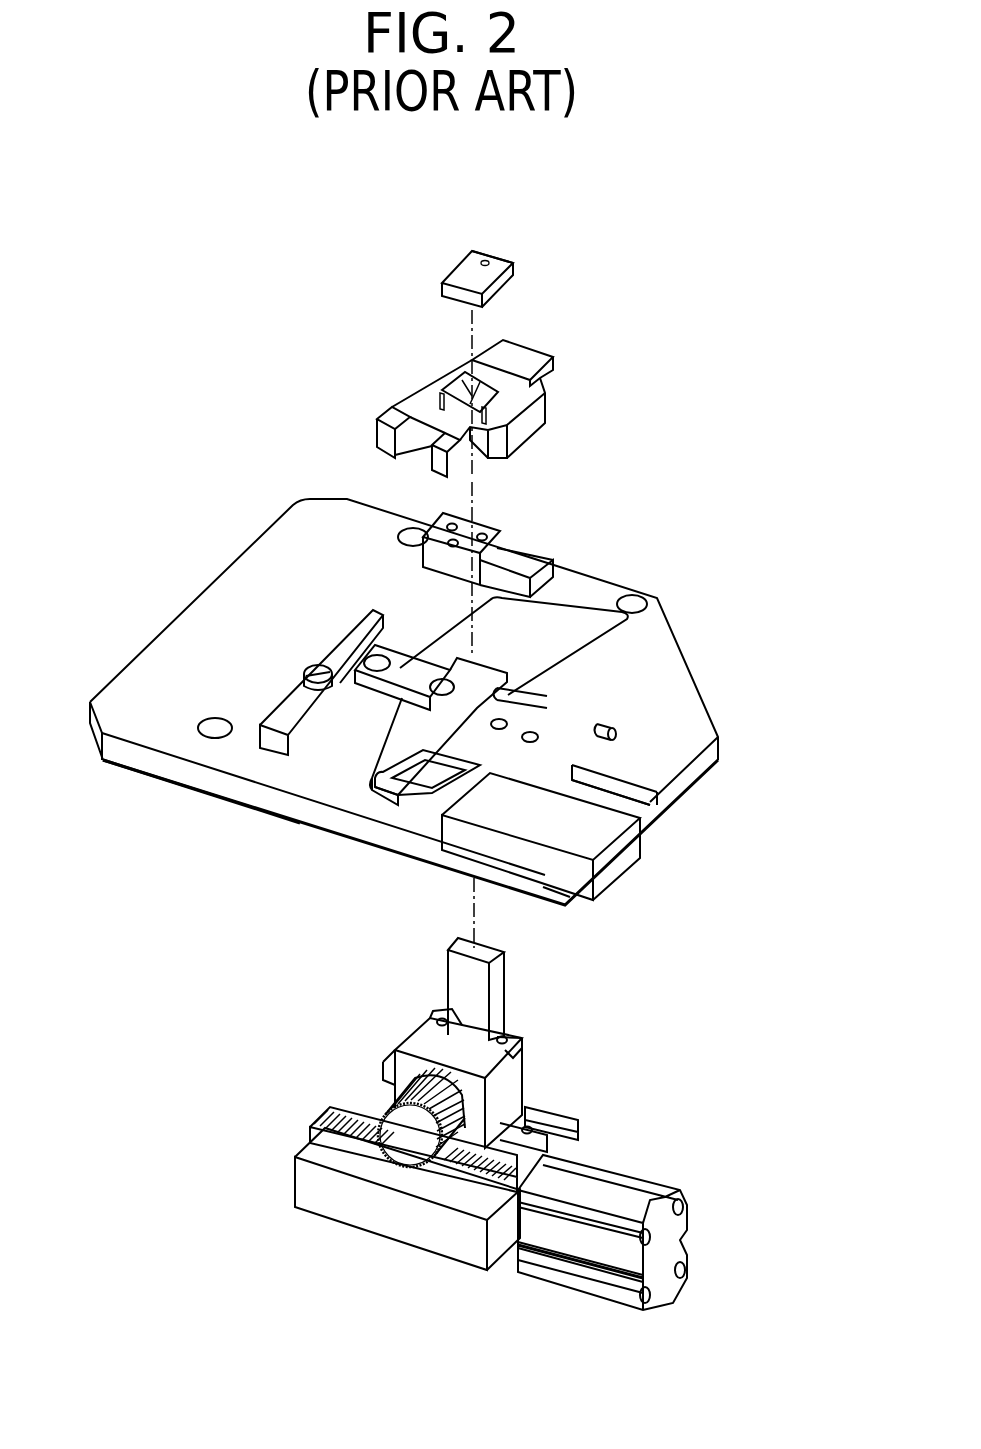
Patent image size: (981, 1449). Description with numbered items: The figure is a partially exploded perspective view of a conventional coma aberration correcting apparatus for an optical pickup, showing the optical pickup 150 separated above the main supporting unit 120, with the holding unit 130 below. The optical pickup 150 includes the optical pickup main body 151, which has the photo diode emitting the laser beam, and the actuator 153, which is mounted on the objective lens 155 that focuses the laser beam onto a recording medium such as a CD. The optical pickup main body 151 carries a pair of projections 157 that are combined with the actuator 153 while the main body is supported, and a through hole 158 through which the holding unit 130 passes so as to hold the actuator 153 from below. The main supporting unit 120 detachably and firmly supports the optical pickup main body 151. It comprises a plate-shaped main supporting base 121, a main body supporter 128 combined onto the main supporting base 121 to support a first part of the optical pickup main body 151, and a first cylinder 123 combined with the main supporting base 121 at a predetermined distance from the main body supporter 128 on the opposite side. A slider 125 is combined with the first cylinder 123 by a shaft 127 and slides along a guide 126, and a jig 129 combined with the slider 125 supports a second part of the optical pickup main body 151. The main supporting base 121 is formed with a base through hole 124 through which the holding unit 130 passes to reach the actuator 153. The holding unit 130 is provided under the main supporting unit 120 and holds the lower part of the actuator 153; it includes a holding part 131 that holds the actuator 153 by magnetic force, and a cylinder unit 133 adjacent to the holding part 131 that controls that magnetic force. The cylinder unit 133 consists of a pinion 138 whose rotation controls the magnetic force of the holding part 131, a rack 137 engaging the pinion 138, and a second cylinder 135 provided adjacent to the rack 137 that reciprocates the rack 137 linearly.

The main supporting unit 120 is at (180, 586).
The main supporting base 121 is at (177, 745).
The first cylinder 123 is at (478, 815).
The base through hole 124 is at (551, 650).
The slider 125 is at (388, 753).
The guide 126 is at (633, 792).
The shaft 127 is at (400, 803).
The main body supporter 128 is at (272, 750).
The jig 129 is at (300, 768).
The holding unit 130 is at (323, 1070).
The holding part 131 is at (500, 984).
The cylinder unit 133 is at (502, 1343).
The second cylinder 135 is at (558, 1273).
The rack 137 is at (473, 1183).
The pinion 138 is at (407, 1158).
The optical pickup 150 is at (276, 337).
The optical pickup main body 151 is at (385, 423).
The actuator 153 is at (446, 292).
The objective lens 155 is at (452, 275).
The projections 157 is at (438, 402).
The through hole 158 is at (457, 383).